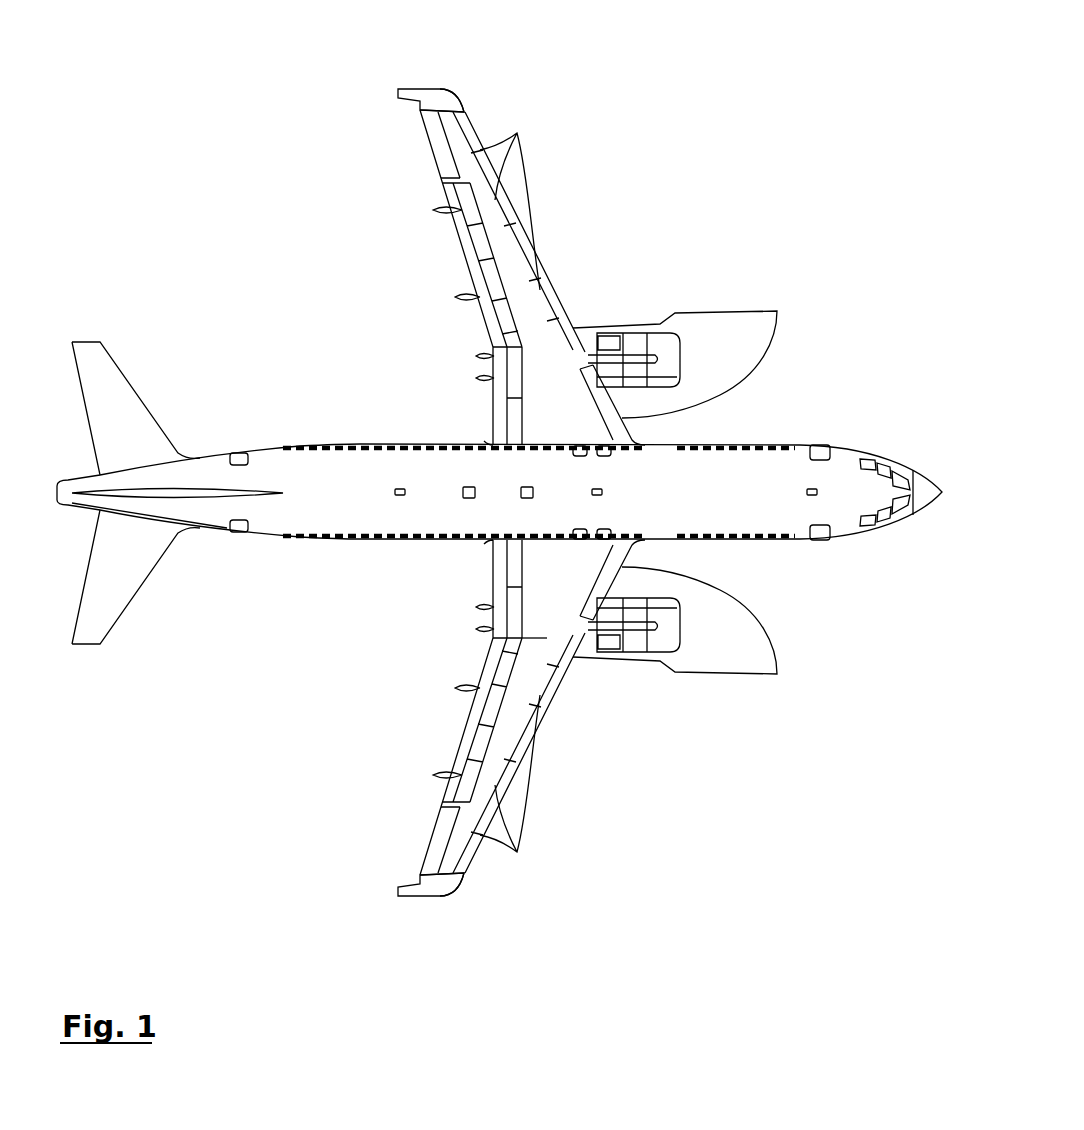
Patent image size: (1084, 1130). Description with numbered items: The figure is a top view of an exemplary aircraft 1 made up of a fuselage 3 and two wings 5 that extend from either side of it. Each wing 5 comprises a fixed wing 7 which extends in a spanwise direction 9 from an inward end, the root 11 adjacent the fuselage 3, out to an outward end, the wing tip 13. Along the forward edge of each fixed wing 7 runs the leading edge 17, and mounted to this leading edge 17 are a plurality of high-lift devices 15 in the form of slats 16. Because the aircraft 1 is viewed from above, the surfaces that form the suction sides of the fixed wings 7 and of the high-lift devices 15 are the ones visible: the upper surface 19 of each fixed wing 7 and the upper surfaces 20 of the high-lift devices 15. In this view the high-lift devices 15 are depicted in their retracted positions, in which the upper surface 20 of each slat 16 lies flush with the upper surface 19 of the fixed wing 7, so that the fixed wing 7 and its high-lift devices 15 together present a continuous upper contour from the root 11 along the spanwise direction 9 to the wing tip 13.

The aircraft 1 is at (255, 214).
The fuselage 3 is at (352, 507).
The wing 5 is at (344, 170).
The fixed wing 7 is at (507, 273).
The spanwise direction 9 is at (545, 177).
The root 11 is at (534, 437).
The wing tip 13 is at (355, 92).
The high-lift device 15 is at (662, 499).
The slat 16 is at (662, 499).
The leading edge 17 is at (483, 96).
The upper surface 19 is at (577, 419).
The upper surface 20 is at (662, 499).